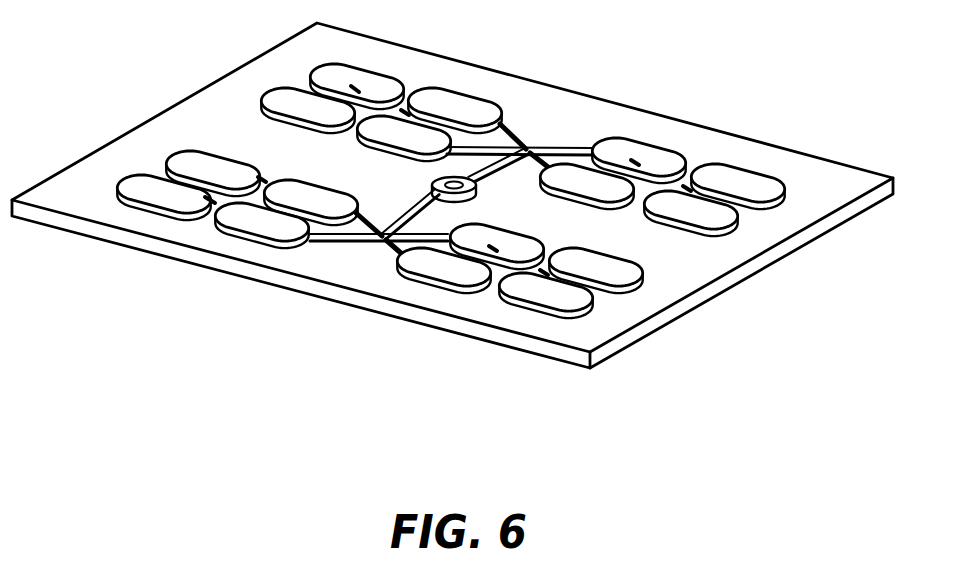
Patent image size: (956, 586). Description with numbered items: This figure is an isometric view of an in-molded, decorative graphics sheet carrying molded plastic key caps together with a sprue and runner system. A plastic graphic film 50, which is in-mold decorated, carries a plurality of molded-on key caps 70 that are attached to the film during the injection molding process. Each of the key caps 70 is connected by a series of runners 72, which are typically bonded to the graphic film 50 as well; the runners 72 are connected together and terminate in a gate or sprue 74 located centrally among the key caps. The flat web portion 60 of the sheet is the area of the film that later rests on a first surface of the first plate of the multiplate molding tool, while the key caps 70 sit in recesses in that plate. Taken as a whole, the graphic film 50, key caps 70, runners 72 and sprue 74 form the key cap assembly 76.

The graphic film 50 is at (830, 227).
The web portion 60 is at (787, 170).
The key caps 70 is at (640, 152).
The runners 72 is at (517, 145).
The sprue 74 is at (457, 183).
The key cap assembly 76 is at (155, 372).